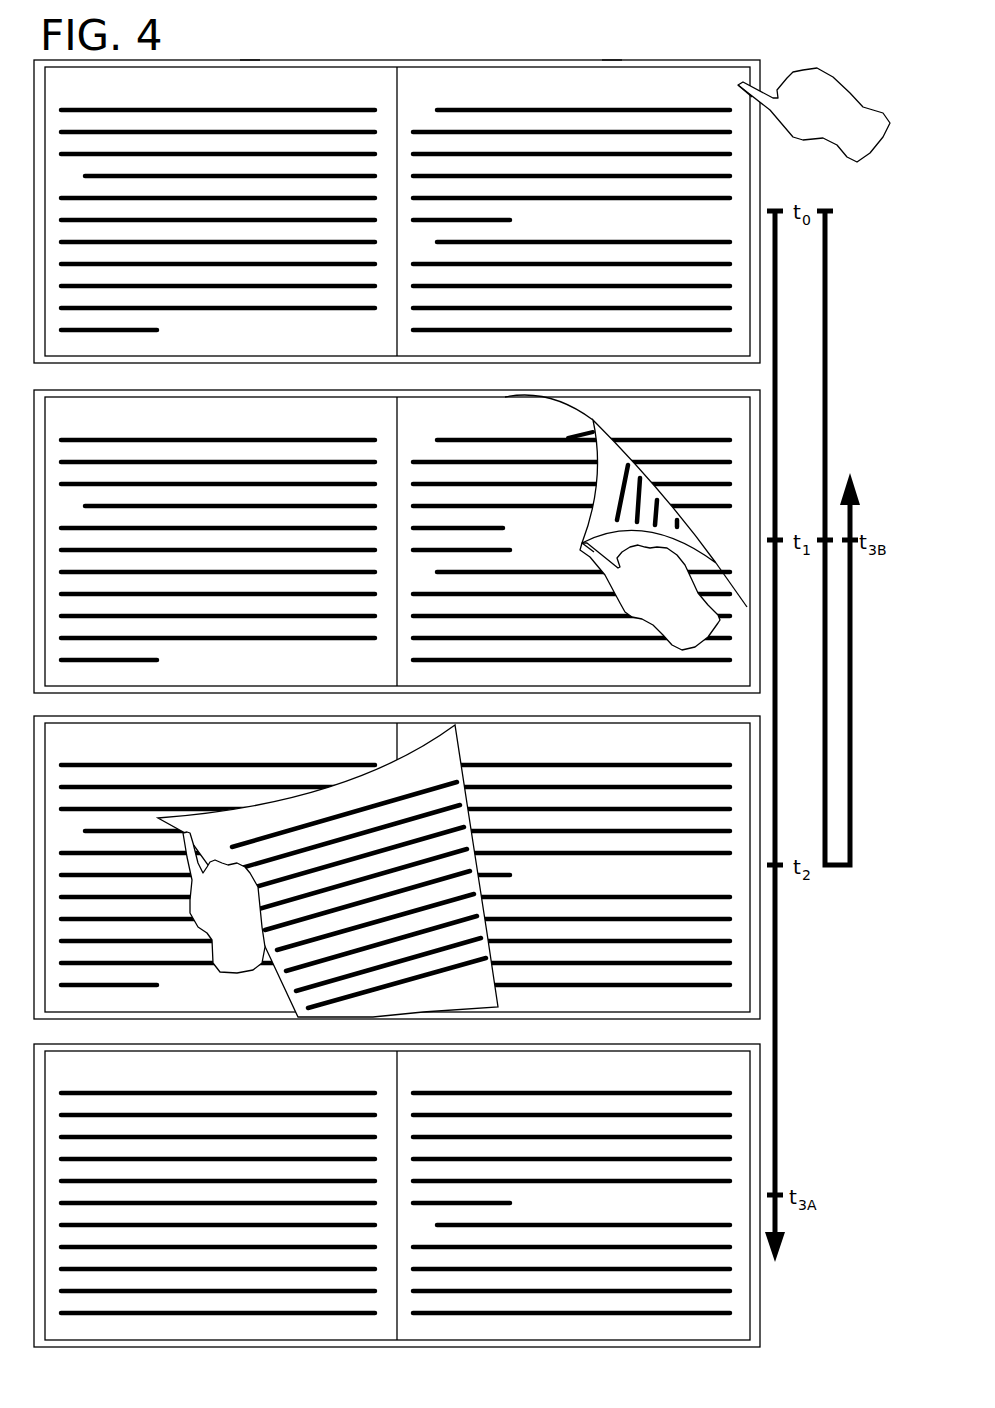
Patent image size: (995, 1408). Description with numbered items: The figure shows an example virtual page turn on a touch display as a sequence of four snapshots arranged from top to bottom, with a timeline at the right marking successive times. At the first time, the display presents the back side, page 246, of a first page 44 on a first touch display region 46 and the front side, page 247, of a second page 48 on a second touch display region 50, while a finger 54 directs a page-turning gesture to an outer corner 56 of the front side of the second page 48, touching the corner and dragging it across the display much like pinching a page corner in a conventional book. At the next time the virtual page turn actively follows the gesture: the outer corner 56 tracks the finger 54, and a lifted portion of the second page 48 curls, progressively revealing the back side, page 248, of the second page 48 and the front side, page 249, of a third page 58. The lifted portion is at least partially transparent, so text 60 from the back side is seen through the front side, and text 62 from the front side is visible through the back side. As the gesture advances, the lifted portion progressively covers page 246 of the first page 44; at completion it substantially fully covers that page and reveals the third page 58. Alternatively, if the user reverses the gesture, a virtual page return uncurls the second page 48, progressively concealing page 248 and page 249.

The first page 44 is at (168, 78).
The first touch display region 46 is at (250, 55).
The second page 48 is at (482, 80).
The second touch display region 50 is at (612, 53).
The finger 54 is at (742, 88).
The outer corner 56 is at (744, 68).
The third page 58 is at (647, 412).
The text 60 is at (568, 449).
The text 62 is at (639, 474).
The page 246 is at (214, 530).
The page 247 is at (575, 203).
The page 248 is at (365, 889).
The page 249 is at (576, 859).